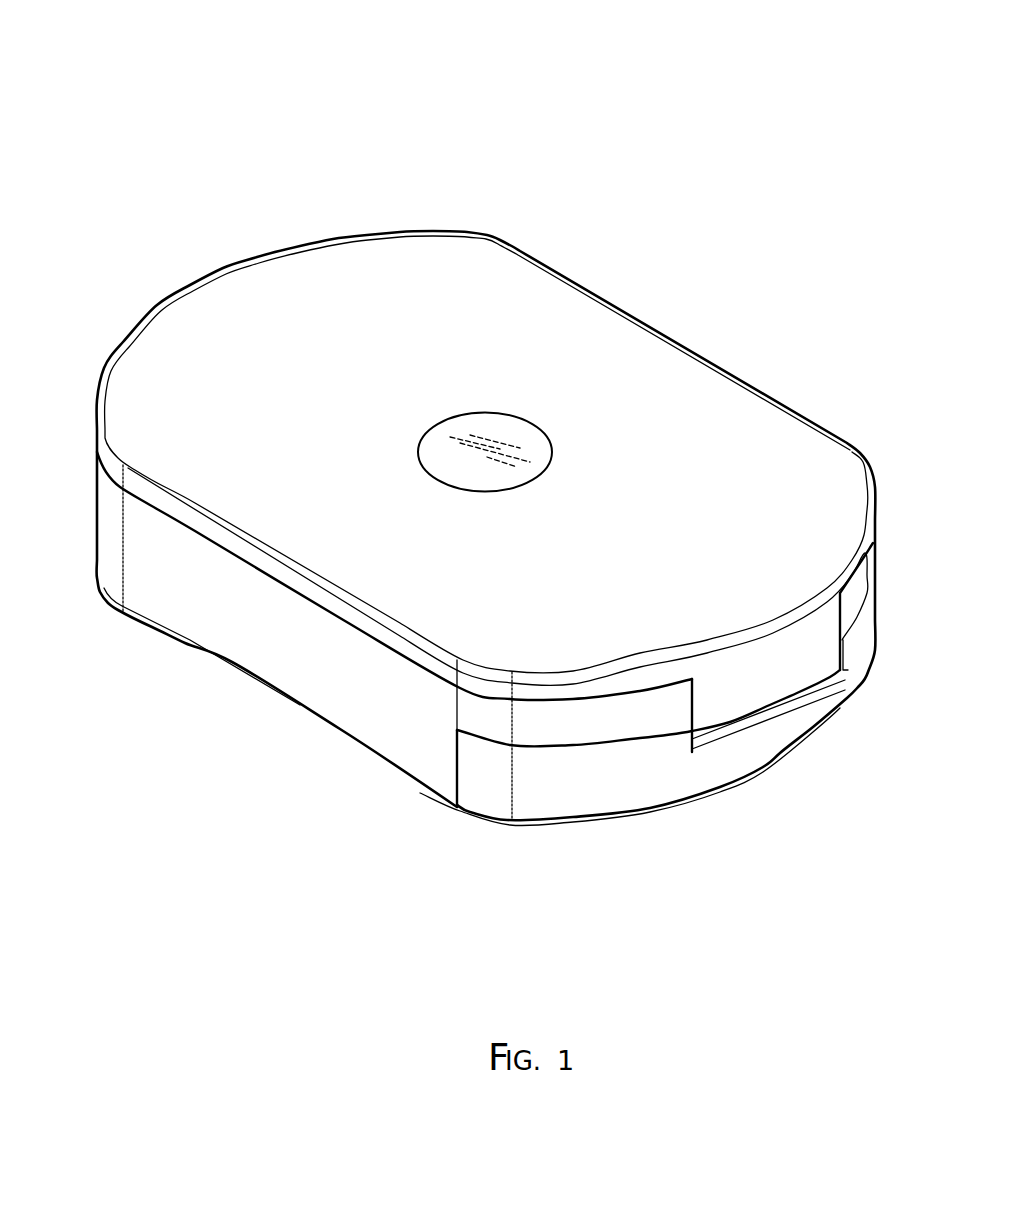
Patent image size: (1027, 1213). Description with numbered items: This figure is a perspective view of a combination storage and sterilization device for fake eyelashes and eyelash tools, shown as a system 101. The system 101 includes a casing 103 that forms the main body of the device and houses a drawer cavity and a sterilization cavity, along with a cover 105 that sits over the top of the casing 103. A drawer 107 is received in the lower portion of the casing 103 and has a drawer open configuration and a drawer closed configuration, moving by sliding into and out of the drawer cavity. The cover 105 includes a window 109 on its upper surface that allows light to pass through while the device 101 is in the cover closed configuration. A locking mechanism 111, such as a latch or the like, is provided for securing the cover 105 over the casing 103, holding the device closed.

The system 101 is at (217, 63).
The casing 103 is at (245, 647).
The cover 105 is at (140, 405).
The drawer 107 is at (613, 793).
The window 109 is at (497, 457).
The locking mechanism 111 is at (790, 660).